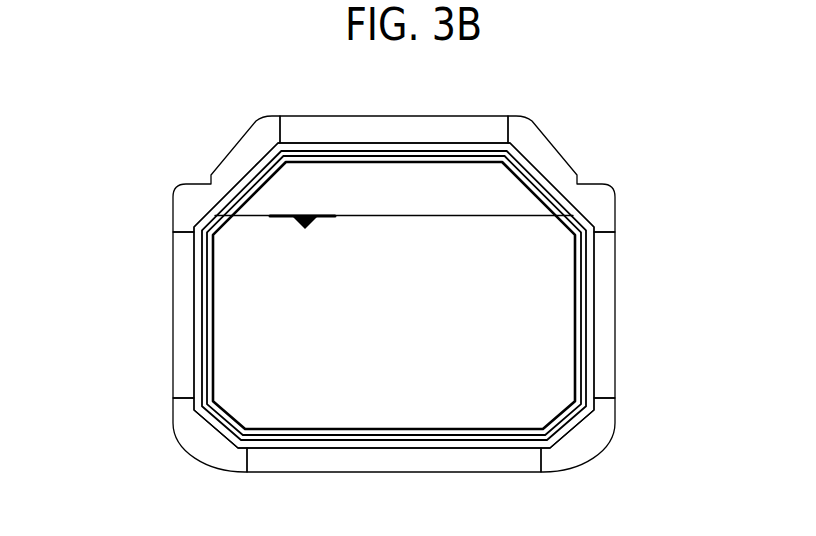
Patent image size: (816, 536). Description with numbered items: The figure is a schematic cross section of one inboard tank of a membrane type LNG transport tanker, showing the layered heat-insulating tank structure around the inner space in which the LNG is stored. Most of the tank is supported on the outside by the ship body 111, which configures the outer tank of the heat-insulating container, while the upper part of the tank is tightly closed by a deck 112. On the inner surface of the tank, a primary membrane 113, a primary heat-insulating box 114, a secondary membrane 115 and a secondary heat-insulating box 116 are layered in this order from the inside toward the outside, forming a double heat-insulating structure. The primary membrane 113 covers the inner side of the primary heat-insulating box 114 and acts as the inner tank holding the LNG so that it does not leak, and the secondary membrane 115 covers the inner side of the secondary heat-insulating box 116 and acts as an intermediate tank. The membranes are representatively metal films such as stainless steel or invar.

The ship body 111 is at (182, 287).
The deck 112 is at (542, 147).
The primary membrane 113 is at (574, 266).
The primary heat-insulating box 114 is at (580, 303).
The secondary membrane 115 is at (583, 340).
The secondary heat-insulating box 116 is at (590, 375).